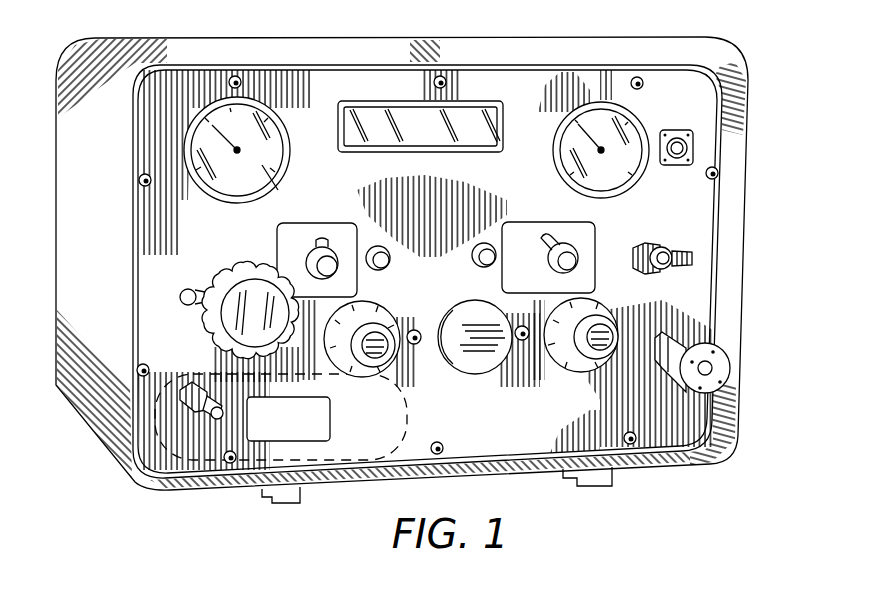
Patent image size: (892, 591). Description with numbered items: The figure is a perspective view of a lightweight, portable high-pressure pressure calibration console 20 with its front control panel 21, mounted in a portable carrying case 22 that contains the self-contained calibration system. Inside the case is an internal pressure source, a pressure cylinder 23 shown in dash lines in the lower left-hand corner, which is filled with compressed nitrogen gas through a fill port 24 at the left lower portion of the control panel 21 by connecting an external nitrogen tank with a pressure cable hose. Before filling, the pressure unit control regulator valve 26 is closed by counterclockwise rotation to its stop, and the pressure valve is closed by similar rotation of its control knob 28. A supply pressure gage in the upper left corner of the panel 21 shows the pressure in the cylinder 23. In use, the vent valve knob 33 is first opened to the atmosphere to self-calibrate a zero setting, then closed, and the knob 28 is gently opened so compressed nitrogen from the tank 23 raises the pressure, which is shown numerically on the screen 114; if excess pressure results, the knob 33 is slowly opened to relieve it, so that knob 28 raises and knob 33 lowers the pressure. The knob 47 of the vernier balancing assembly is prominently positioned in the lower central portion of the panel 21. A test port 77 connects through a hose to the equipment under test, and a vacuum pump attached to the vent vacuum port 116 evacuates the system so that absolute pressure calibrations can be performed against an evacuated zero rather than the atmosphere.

The pressure calibration console 20 is at (437, 275).
The front control panel 21 is at (715, 210).
The portable carrying case 22 is at (680, 62).
The pressure cylinder 23 is at (217, 478).
The fill port 24 is at (192, 380).
The pressure unit control regulator valve 26 is at (232, 268).
The control knob 28 is at (388, 328).
The vent valve knob 33 is at (600, 365).
The knob 47 is at (470, 313).
The test port 77 is at (690, 330).
The screen 114 is at (345, 127).
The vent vacuum port 116 is at (694, 272).